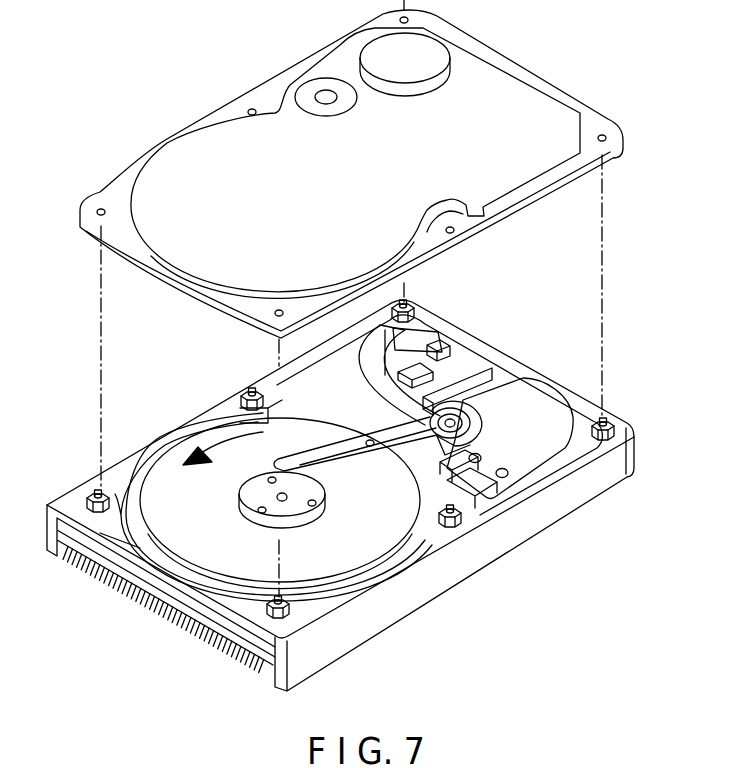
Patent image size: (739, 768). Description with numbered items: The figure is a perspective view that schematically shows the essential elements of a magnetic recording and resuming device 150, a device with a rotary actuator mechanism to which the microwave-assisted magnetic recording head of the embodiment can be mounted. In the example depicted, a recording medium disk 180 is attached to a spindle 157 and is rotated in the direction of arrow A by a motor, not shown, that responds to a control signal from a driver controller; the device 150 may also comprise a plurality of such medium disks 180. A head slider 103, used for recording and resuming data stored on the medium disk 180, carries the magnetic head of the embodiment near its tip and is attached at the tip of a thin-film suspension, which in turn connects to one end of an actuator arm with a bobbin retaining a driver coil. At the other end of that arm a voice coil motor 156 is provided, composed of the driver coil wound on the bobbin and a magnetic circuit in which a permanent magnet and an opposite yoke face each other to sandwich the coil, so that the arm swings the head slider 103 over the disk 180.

The magnetic recording and resuming device 150 is at (218, 83).
The recording medium disk 180 is at (168, 470).
The head slider 103 is at (279, 462).
The spindle 157 is at (452, 420).
The voice coil motor 156 is at (517, 460).